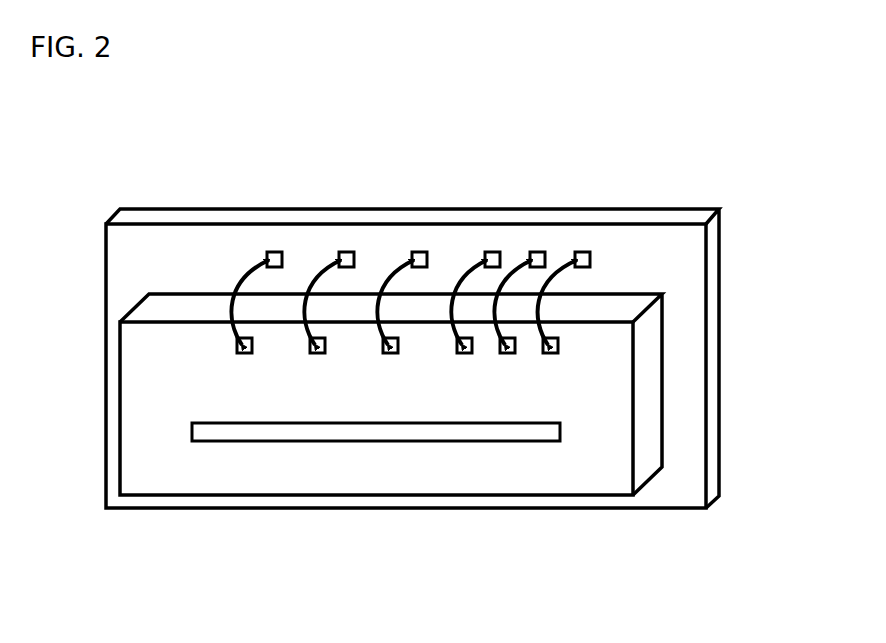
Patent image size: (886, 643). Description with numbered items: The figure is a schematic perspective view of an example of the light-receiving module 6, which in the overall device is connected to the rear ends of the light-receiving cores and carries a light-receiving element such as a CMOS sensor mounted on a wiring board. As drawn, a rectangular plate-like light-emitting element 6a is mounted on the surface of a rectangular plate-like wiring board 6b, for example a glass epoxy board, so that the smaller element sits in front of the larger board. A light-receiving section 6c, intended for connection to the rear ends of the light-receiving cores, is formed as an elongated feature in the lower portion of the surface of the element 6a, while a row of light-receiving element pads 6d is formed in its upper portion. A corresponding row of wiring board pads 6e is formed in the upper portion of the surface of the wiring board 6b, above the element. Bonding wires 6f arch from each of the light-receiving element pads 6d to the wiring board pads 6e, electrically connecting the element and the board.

The light-receiving module 6 is at (459, 356).
The light-emitting element 6a is at (617, 363).
The wiring board 6b is at (690, 435).
The light-receiving section 6c is at (325, 431).
The light-receiving element pads 6d is at (507, 354).
The wiring board pads 6e is at (485, 252).
The bonding wires 6f is at (323, 270).